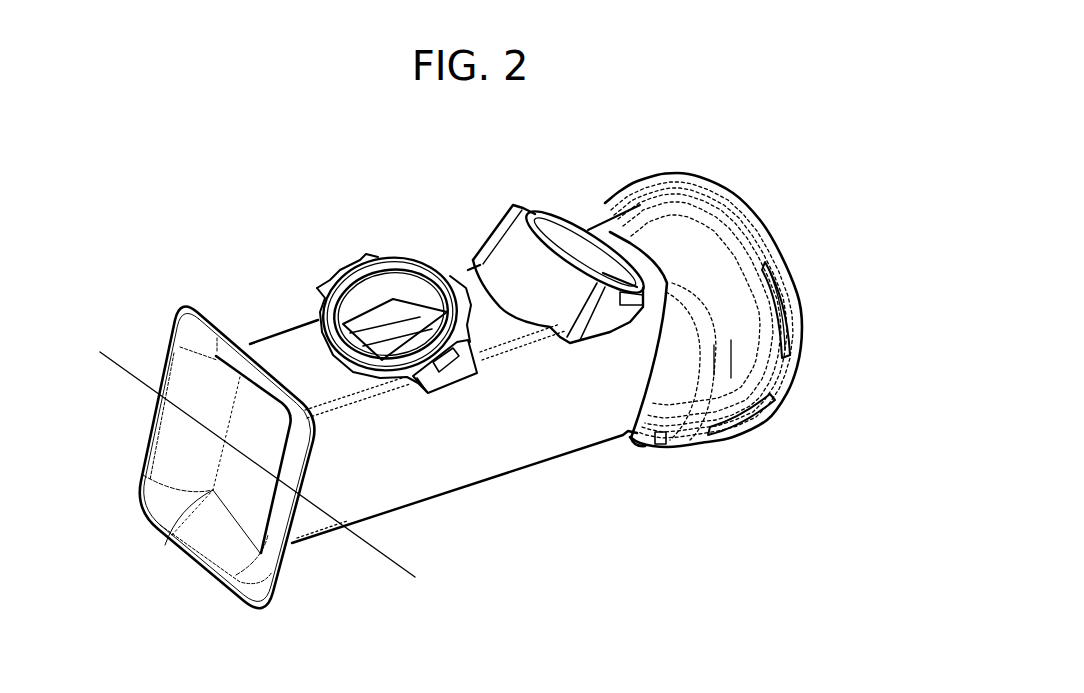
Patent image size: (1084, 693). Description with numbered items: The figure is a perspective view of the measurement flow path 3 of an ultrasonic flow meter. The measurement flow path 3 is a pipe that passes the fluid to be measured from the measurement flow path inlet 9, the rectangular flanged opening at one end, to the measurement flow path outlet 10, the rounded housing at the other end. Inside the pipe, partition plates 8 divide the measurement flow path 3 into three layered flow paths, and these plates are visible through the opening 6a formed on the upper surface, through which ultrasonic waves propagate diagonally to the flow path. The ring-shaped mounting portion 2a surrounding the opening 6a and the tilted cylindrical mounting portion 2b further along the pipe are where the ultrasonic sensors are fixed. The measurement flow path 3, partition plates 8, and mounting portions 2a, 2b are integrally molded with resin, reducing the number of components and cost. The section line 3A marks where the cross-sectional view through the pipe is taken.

The mounting portion 2a is at (332, 287).
The mounting portion 2b is at (542, 210).
The measurement flow path 3 is at (502, 418).
The section line 3A is at (122, 367).
The opening 6a is at (390, 315).
The partition plate 8 is at (405, 300).
The measurement flow path inlet 9 is at (177, 427).
The measurement flow path outlet 10 is at (743, 378).